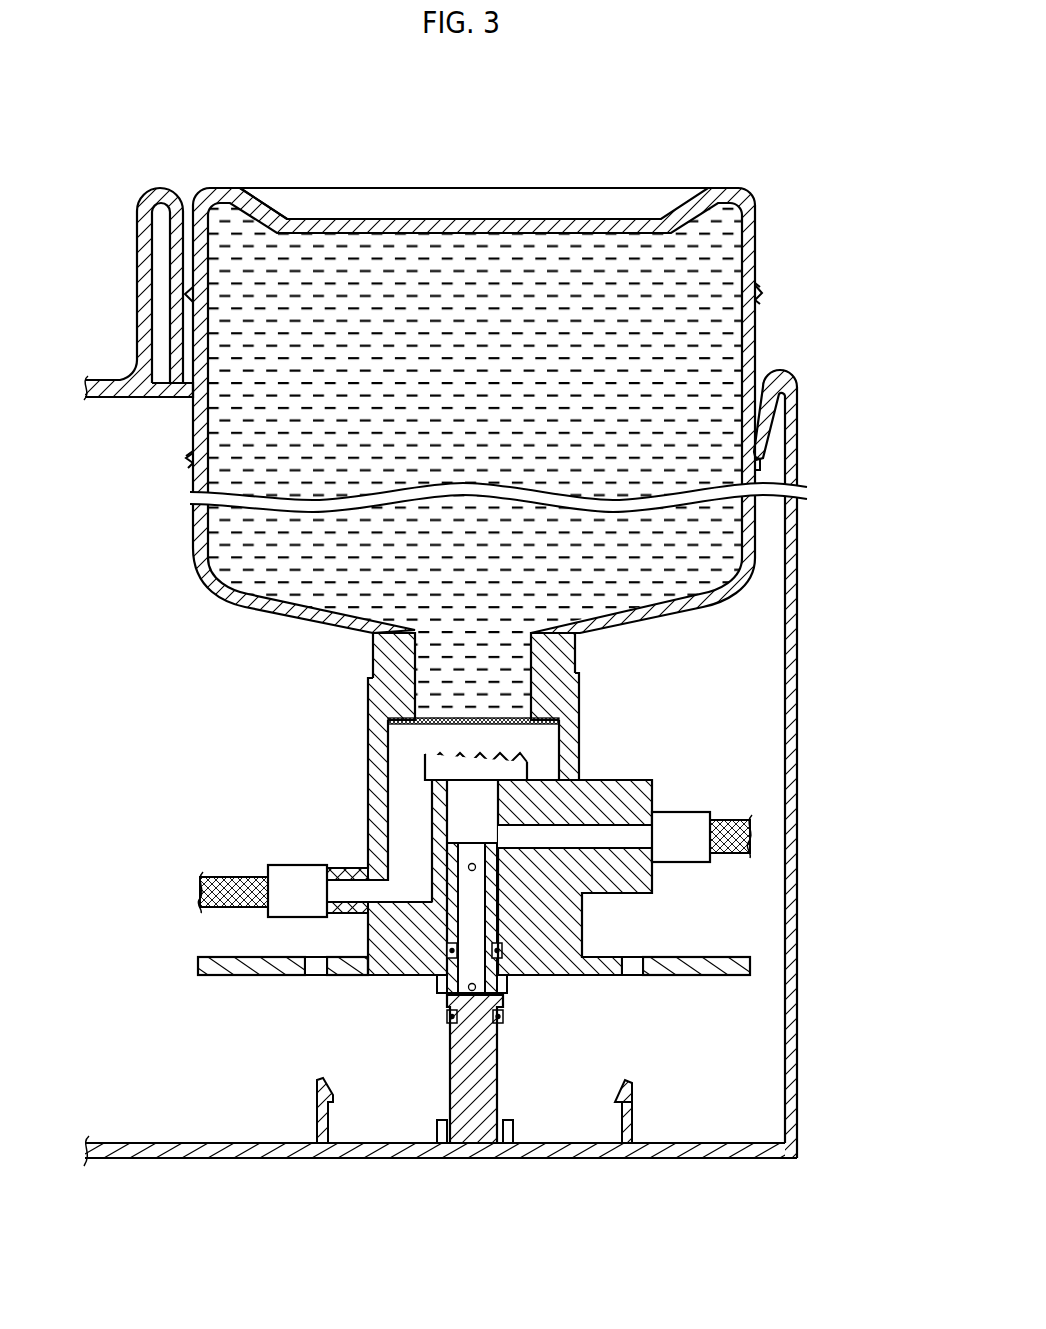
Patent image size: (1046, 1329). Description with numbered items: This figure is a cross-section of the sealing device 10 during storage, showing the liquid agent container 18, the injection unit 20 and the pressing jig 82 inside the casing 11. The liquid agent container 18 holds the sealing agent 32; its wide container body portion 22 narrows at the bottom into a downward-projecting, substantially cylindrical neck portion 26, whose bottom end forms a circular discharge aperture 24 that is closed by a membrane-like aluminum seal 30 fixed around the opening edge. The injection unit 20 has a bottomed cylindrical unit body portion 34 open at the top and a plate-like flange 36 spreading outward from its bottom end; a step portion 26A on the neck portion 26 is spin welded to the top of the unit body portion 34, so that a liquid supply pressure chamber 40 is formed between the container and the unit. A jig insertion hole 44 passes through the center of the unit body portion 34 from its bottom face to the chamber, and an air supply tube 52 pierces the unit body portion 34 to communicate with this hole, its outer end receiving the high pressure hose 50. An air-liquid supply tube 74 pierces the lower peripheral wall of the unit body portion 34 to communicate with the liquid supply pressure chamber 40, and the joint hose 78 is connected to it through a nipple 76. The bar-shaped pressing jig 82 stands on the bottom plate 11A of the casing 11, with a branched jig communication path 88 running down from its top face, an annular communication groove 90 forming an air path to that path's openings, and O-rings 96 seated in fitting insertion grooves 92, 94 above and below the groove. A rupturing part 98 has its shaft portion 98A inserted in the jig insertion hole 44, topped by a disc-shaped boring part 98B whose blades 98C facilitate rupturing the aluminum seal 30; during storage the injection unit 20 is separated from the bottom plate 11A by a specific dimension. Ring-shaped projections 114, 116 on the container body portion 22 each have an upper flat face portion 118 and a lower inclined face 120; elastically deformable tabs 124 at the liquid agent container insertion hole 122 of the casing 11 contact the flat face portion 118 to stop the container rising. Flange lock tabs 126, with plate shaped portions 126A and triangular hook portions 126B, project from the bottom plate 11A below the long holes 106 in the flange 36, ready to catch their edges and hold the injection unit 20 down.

The sealing device 10 is at (327, 168).
The casing 11 is at (797, 630).
The bottom plate 11A is at (156, 1141).
The liquid agent container 18 is at (193, 541).
The injection unit 20 is at (393, 821).
The container body portion 22 is at (195, 420).
The discharge aperture 24 is at (413, 720).
The neck portion 26 is at (370, 655).
The step portion 26A is at (368, 698).
The aluminum seal 30 is at (397, 723).
The sealing agent 32 is at (460, 280).
The unit body portion 34 is at (370, 769).
The flange 36 is at (237, 955).
The liquid supply pressure chamber 40 is at (428, 813).
The jig insertion hole 44 is at (440, 933).
The high pressure hose 50 is at (706, 814).
The air supply tube 52 is at (642, 895).
The air-liquid supply tube 74 is at (350, 868).
The nipple 76 is at (287, 865).
The joint hose 78 is at (200, 892).
The pressing jig 82 is at (447, 1093).
The jig communication path 88 is at (462, 867).
The communication groove 90 is at (497, 980).
The fitting insertion groove 92 is at (447, 930).
The fitting insertion groove 94 is at (503, 1040).
The O-rings 96 is at (502, 952).
The rupturing part 98 is at (584, 754).
The shaft portion 98A is at (507, 807).
The boring part 98B is at (527, 767).
The blades 98C is at (493, 753).
The long holes 106 is at (315, 976).
The ring-shaped projection 114 is at (763, 292).
The ring-shaped projection 116 is at (190, 463).
The flat face portion 118 is at (757, 285).
The inclined face 120 is at (758, 302).
The liquid agent container insertion hole 122 is at (189, 240).
The tabs 124 is at (798, 428).
The flange lock tabs 126 is at (698, 1096).
The plate shaped portions 126A is at (633, 1118).
The hook portions 126B is at (617, 1095).